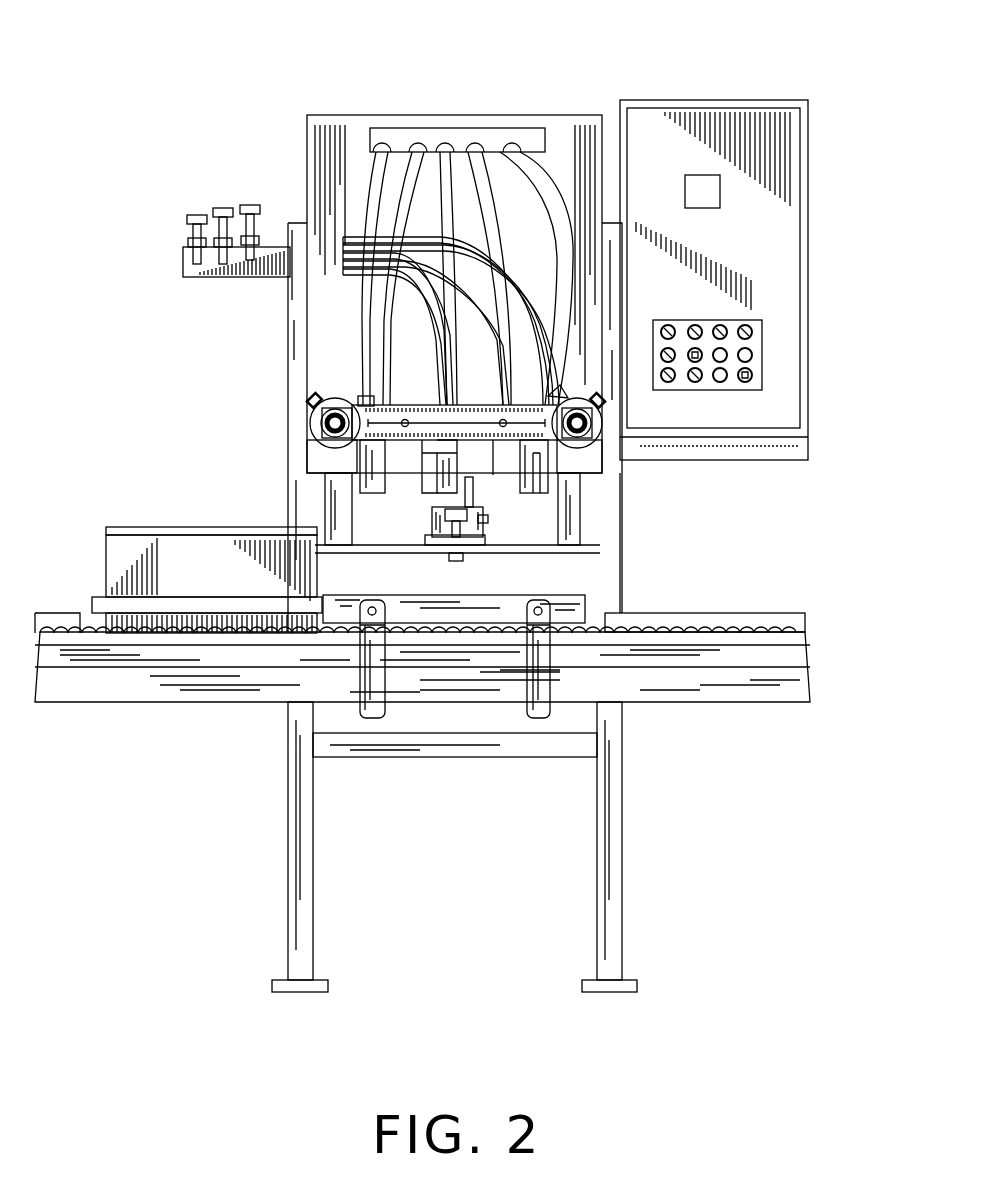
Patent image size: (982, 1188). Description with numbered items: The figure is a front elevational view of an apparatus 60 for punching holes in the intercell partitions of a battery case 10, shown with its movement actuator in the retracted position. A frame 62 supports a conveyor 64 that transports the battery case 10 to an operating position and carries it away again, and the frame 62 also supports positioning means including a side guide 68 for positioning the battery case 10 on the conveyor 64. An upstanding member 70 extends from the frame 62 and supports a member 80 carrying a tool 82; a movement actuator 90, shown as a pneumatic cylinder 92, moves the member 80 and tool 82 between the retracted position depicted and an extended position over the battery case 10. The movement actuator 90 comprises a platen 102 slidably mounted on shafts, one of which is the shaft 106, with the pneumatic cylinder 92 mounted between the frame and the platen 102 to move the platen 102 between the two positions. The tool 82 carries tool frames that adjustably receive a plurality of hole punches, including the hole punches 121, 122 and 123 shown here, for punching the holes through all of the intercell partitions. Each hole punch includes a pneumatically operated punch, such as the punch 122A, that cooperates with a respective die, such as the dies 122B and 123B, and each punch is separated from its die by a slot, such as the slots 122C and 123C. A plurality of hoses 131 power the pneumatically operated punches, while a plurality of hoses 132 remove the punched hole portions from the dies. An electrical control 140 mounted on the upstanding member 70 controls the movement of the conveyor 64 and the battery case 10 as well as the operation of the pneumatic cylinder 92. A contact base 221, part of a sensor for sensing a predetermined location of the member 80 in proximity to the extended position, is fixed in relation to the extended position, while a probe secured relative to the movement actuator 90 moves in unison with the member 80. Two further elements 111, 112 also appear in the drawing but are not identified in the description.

The battery case 10 is at (106, 570).
The apparatus 60 is at (770, 63).
The frame 62 is at (622, 835).
The conveyor 64 is at (140, 645).
The side guide 68 is at (183, 605).
The upstanding member 70 is at (296, 448).
The member 80 is at (298, 92).
The tool 82 is at (365, 405).
The movement actuator 90 is at (508, 523).
The pneumatic cylinder 92 is at (497, 470).
The platen 102 is at (336, 495).
The shaft 106 is at (560, 527).
The left roller 111 is at (320, 425).
The right roller 112 is at (600, 408).
The hole punch 121 is at (320, 405).
The hole punch 122 is at (455, 400).
The pneumatically operated punch 122A is at (545, 463).
The die 122B is at (417, 477).
The slot 122C is at (440, 480).
The hole punch 123 is at (562, 398).
The die 123B is at (480, 522).
The slot 123C is at (523, 462).
The hoses 131 is at (442, 258).
The hoses 132 is at (491, 160).
The electrical control 140 is at (778, 240).
The contact base 221 is at (268, 128).